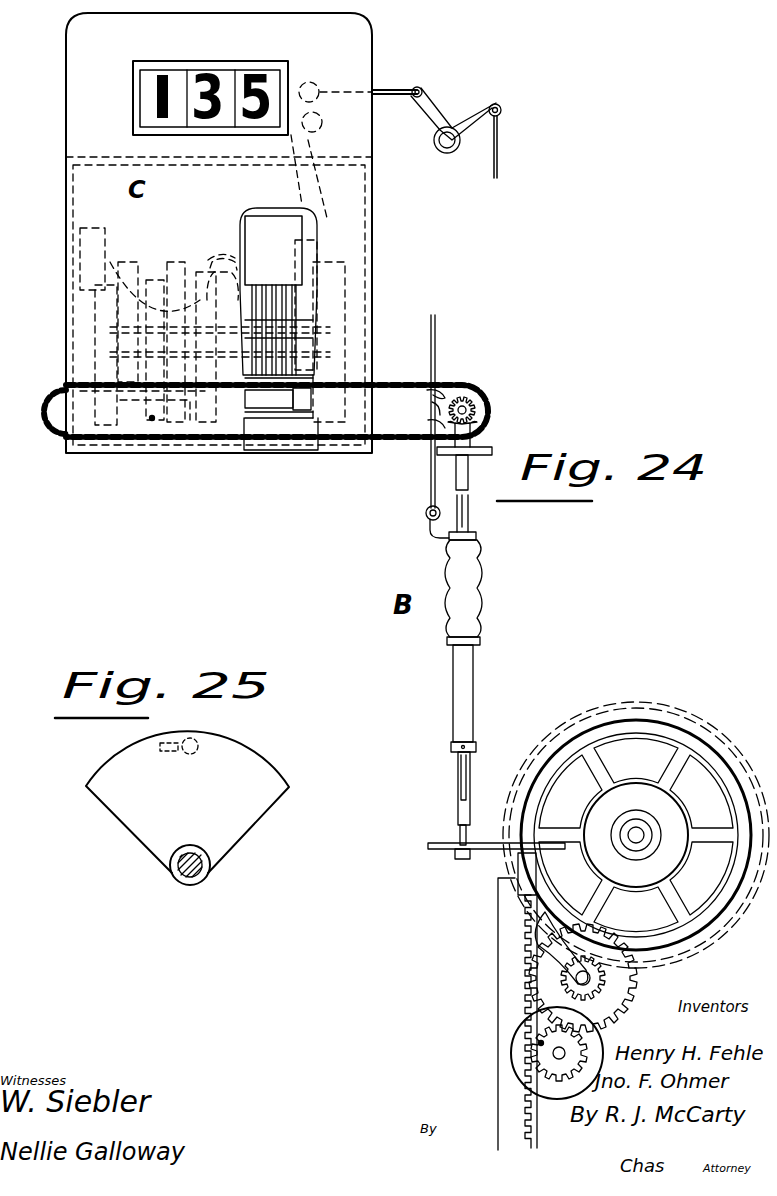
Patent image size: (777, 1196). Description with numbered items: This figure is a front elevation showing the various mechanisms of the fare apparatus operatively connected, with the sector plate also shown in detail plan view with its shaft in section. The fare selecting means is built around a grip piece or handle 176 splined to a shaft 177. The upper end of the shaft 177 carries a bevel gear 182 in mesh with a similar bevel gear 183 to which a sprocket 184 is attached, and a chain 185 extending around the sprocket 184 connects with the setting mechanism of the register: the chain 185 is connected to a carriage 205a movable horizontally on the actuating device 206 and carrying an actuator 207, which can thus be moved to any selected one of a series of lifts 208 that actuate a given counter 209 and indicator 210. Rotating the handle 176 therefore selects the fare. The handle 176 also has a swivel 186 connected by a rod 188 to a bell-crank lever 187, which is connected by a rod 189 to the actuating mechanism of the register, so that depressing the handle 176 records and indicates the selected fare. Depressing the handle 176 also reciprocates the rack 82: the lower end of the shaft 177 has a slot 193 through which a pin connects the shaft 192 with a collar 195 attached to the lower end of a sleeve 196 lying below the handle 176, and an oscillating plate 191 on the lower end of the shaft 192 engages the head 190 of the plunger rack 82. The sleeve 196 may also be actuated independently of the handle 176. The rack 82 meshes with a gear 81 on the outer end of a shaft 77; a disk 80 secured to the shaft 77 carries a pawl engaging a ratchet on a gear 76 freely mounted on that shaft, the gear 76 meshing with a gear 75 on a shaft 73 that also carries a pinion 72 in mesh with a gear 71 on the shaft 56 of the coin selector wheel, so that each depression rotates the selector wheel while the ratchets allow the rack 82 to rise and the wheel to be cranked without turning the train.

In FIG. 24, the rod 189 is at (412, 88).
In FIG. 24, the bell-crank lever 187 is at (435, 120).
In FIG. 24, the rod 188 is at (497, 172).
In FIG. 24, the swivel 186 is at (428, 540).
In FIG. 24, the chain 185 is at (452, 384).
In FIG. 24, the sprocket 184 is at (478, 407).
In FIG. 24, the bevel gear 183 is at (473, 415).
In FIG. 24, the bevel gear 182 is at (467, 437).
In FIG. 24, the shaft 177 is at (468, 520).
In FIG. 24, the grip piece or handle 176 is at (466, 578).
In FIG. 24, the collar 195 is at (477, 640).
In FIG. 24, the sleeve 196 is at (472, 698).
In FIG. 24, the slot 193 is at (462, 778).
In FIG. 24, the shaft 192 is at (460, 834).
In FIG. 25, the shaft 192 is at (190, 855).
In FIG. 24, the oscillating plate 191 is at (440, 853).
In FIG. 25, the oscillating plate 191 is at (185, 769).
In FIG. 24, the head of the plunger 190 is at (527, 871).
In FIG. 25, the head of the plunger 190 is at (198, 752).
In FIG. 24, the gear 71 is at (628, 712).
In FIG. 24, the shaft 56 is at (640, 835).
In FIG. 24, the pinion 72 is at (637, 990).
In FIG. 24, the shaft 73 is at (543, 932).
In FIG. 24, the gear 75 is at (553, 963).
In FIG. 24, the gear 76 is at (537, 1037).
In FIG. 24, the shaft 77 is at (556, 1054).
In FIG. 24, the disk 80 is at (593, 1042).
In FIG. 24, the gear 81 is at (555, 1068).
In FIG. 24, the rack 82 is at (510, 1033).
In FIG. 25, the rack 82 is at (163, 757).
In FIG. 24, the actuating device 206 is at (97, 317).
In FIG. 24, the actuator 207 is at (172, 345).
In FIG. 24, the carriage 205a is at (157, 272).
In FIG. 24, the lifts 208 is at (187, 256).
In FIG. 24, the counter 209 is at (290, 347).
In FIG. 24, the indicator 210 is at (292, 275).